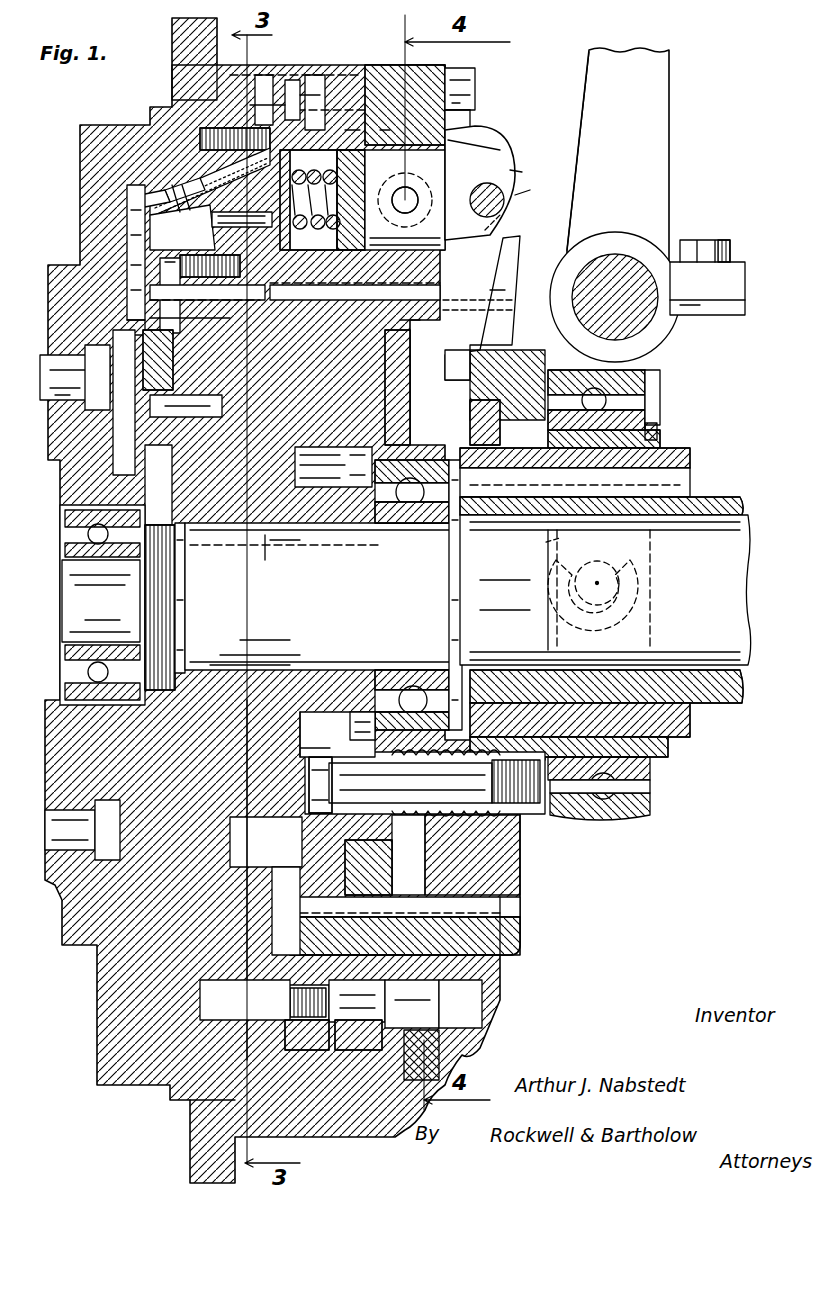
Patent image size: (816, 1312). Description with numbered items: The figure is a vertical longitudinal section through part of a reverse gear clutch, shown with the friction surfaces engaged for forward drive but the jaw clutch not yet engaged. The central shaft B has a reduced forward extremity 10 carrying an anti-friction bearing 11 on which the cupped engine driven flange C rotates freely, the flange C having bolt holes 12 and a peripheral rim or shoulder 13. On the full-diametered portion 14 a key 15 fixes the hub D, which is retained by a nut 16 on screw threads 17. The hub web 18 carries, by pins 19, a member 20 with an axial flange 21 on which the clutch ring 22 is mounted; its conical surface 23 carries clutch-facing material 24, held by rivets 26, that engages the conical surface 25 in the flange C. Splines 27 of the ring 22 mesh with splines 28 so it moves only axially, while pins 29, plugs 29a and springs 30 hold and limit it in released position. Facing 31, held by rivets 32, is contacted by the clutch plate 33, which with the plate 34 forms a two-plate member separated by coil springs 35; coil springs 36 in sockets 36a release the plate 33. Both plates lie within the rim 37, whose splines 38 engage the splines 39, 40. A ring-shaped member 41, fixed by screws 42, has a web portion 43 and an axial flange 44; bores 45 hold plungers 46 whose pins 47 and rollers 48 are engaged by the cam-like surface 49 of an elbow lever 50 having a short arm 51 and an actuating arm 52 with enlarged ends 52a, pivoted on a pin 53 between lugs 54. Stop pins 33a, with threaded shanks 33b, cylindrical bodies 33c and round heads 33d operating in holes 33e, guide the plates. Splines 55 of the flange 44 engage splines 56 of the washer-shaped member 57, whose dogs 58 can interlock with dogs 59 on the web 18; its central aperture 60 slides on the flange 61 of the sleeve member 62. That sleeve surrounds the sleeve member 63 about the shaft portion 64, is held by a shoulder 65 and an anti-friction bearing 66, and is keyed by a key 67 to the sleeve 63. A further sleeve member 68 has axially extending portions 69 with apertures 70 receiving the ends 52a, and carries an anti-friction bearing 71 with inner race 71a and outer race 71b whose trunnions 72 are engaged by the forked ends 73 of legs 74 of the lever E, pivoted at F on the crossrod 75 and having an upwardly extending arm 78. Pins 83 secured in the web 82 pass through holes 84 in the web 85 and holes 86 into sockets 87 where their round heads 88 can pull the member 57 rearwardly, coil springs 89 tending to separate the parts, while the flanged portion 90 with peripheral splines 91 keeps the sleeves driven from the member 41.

The reduced forward extremity 10 is at (98, 602).
The anti-friction bearing 11 is at (90, 534).
The holes 12 is at (50, 830).
The rim or shoulder 13 is at (190, 1162).
The full-diametered portion 14 is at (315, 597).
The key 15 is at (290, 530).
The nut 16 is at (188, 650).
The screw threads 17 is at (162, 588).
The lateral flange or web 18 is at (215, 375).
The pins 19 is at (160, 405).
The member 20 is at (155, 365).
The axial flange 21 is at (190, 316).
The clutch member or ring 22 is at (140, 205).
The conical surface 23 is at (178, 183).
The clutch-facing material 24 is at (205, 175).
The conical surface 25 is at (150, 190).
The rivets 26 is at (182, 217).
The teeth or splines 27 is at (82, 262).
The teeth or splines 28 is at (150, 290).
The pins 29 is at (170, 275).
The plugs 29a is at (165, 268).
The springs 30 is at (205, 275).
The clutch-facing material 31 is at (292, 160).
The rivets 32 is at (275, 135).
The clutch ring or plate 33 is at (320, 170).
The guide and stop pins 33a is at (362, 1012).
The threaded shanks 33b is at (320, 1020).
The cylindrical bodies 33c is at (400, 1012).
The round heads 33d is at (395, 1005).
The holes 33e is at (400, 985).
The plate 34 is at (345, 170).
The coil springs 35 is at (405, 200).
The coil springs 36 is at (252, 128).
The sockets 36a is at (210, 140).
The peripheral wall or rim portion 37 is at (305, 120).
The splines 38 is at (400, 85).
The teeth or splines 39 is at (335, 140).
The teeth or splines 40 is at (375, 140).
The ring-shaped member 41 is at (465, 120).
The screws 42 is at (466, 80).
The web portion 43 is at (445, 1056).
The axial flange portion 44 is at (505, 935).
The bores 45 is at (470, 138).
The plungers 46 is at (498, 155).
The pin 47 is at (487, 192).
The roller 48 is at (410, 196).
The cam-like surface 49 is at (478, 243).
The elbow lever 50 is at (492, 256).
The short roller-engaging arm 51 is at (483, 269).
The actuating arm 52 is at (472, 310).
The inner enlarged ends 52a is at (410, 300).
The pivot pin 53 is at (505, 200).
The lugs 54 is at (512, 170).
The splines 55 is at (520, 905).
The splines 56 is at (395, 895).
The ring or washer-shaped member 57 is at (375, 856).
The dogs or lugs 58 is at (296, 844).
The dogs 59 is at (262, 825).
The central aperture 60 is at (310, 460).
The forwardly projecting flange 61 is at (397, 440).
The sleeve member 62 is at (645, 458).
The sleeve member 63 is at (735, 492).
The shaft portion 64 is at (732, 602).
The shoulder 65 is at (455, 608).
The anti-friction bearing 66 is at (410, 690).
The key 67 is at (680, 478).
The sleeve member 68 is at (660, 440).
The axially extending portions 69 is at (512, 375).
The apertures 70 is at (445, 355).
The anti-friction bearing 71 is at (650, 372).
The inner race 71a is at (648, 418).
The outer race 71b is at (655, 390).
The trunnions 72 is at (608, 582).
The forked ends 73 is at (638, 598).
The legs 74 is at (545, 540).
The crossrod 75 is at (640, 286).
The upwardly extending arm 78 is at (660, 180).
The web or flange portion 82 is at (498, 422).
The pins 83 is at (394, 794).
The holes 84 is at (500, 800).
The web 85 is at (470, 820).
The holes 86 is at (358, 735).
The sockets 87 is at (305, 765).
The round heads 88 is at (318, 782).
The coil spring 89 is at (408, 855).
The peripheral flanged portion 90 is at (515, 898).
The peripheral splines 91 is at (520, 908).
The central shaft B is at (730, 626).
The engine driven flange C is at (70, 470).
The hub D is at (292, 660).
The lever E is at (658, 116).
The pivot F is at (627, 258).